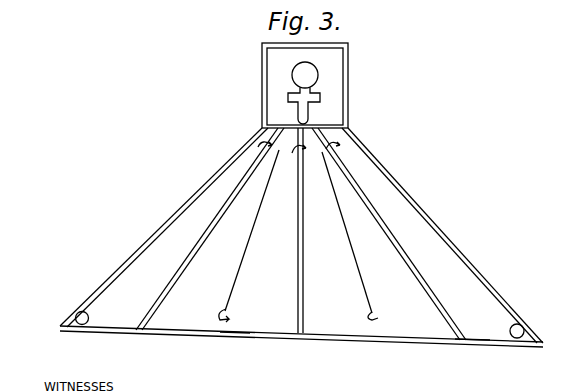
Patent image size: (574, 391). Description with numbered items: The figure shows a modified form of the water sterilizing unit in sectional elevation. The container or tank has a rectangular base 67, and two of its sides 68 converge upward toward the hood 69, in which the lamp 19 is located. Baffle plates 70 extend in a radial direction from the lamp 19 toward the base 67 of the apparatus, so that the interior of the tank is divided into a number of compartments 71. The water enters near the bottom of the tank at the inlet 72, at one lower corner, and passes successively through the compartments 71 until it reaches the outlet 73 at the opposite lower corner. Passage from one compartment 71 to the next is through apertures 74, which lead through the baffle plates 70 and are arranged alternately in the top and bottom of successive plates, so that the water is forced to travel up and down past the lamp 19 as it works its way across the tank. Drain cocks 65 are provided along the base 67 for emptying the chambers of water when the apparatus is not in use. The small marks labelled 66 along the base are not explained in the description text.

The lamp 19 is at (292, 84).
The drain cocks 65 is at (355, 350).
The fastening clips 66 is at (490, 350).
The rectangular base 67 is at (396, 340).
The sides 68 is at (251, 141).
The hood 69 is at (348, 91).
The baffle plates 70 is at (229, 202).
The compartments 71 is at (298, 231).
The inlet 72 is at (88, 314).
The outlet 73 is at (523, 325).
The apertures 74 is at (232, 320).